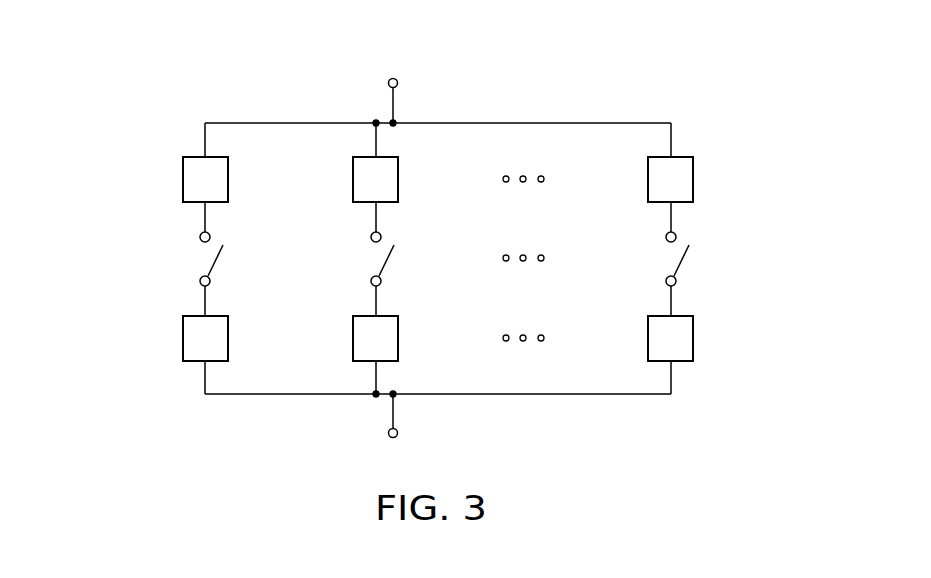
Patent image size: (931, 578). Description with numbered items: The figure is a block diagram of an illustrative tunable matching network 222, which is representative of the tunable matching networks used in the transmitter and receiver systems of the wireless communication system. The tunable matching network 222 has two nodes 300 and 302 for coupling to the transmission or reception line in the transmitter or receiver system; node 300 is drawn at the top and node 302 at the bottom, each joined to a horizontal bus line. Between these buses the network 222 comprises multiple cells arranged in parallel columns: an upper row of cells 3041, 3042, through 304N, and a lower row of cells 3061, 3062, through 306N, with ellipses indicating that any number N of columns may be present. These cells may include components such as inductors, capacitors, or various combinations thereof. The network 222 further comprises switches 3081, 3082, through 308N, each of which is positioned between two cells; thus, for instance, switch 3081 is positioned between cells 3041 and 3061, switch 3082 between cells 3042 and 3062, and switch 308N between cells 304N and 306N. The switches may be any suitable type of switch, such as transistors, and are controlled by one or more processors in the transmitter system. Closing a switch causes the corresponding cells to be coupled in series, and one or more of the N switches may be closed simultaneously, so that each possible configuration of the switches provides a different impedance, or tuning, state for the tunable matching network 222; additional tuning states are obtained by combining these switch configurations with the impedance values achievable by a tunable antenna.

The tunable matching network 222 is at (270, 70).
The node 300 is at (398, 81).
The node 302 is at (398, 436).
The cell 3041 is at (183, 178).
The cell 3042 is at (353, 178).
The cell 304N is at (693, 178).
The cell 3061 is at (183, 340).
The cell 3062 is at (353, 340).
The cell 306N is at (693, 336).
The switch 3081 is at (216, 260).
The switch 3082 is at (387, 260).
The switch 308N is at (682, 260).